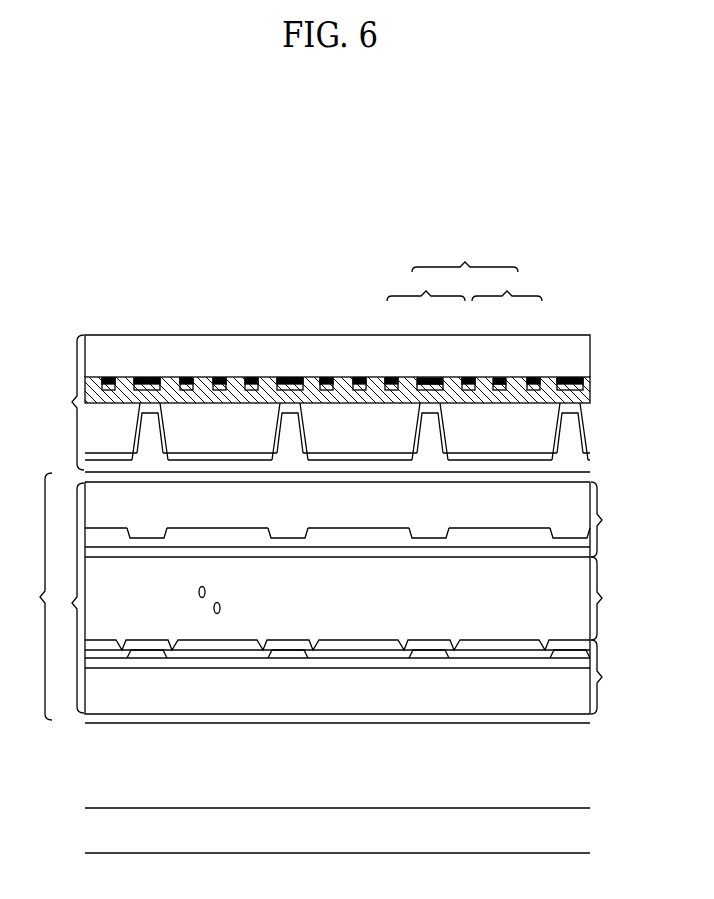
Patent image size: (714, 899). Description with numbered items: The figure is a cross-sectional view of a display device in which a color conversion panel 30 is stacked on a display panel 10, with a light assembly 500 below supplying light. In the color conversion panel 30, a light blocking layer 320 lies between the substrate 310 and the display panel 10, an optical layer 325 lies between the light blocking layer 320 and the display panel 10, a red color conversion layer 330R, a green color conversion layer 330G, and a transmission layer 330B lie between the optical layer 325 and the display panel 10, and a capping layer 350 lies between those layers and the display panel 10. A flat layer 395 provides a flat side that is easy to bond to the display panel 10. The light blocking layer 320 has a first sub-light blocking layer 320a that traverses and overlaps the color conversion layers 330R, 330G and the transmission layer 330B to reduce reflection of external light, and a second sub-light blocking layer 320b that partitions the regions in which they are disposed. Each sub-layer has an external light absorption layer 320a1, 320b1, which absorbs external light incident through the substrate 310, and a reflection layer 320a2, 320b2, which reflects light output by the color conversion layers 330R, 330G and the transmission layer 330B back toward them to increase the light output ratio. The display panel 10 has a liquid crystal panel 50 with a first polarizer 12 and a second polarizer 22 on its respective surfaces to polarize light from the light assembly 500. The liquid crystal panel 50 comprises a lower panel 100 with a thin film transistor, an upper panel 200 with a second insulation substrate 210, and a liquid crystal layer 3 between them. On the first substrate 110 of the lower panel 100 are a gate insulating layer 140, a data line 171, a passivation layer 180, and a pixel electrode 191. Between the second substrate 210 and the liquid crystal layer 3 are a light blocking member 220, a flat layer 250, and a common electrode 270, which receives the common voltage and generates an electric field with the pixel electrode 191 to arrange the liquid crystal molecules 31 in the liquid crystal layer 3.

The color conversion panel 30 is at (67, 402).
The substrate 310 is at (125, 347).
The optical layer 325 is at (167, 382).
The light blocking layer 320 is at (342, 316).
The first sub-light blocking layer 320a is at (322, 331).
The external light absorption layer 320a1 is at (502, 377).
The reflection layer 320a2 is at (488, 377).
The second sub-light blocking layer 320b is at (358, 331).
The external light absorption layer 320b1 is at (435, 377).
The reflection layer 320b2 is at (418, 377).
The red color conversion layer 330R is at (221, 422).
The green color conversion layer 330G is at (343, 422).
The transmission layer 330B is at (528, 417).
The capping layer 350 is at (289, 408).
The flat layer 395 is at (585, 471).
The display panel 10 is at (33, 596).
The liquid crystal panel 50 is at (67, 598).
The upper panel 200 is at (358, 519).
The second insulation substrate 210 is at (338, 507).
The light blocking member 220 is at (288, 535).
The flat layer 250 is at (473, 540).
The common electrode 270 is at (125, 552).
The second polarizer 22 is at (513, 484).
The liquid crystal layer 3 is at (349, 598).
The liquid crystal molecules 31 is at (223, 606).
The pixel electrode 191 is at (383, 640).
The passivation layer 180 is at (236, 657).
The data line 171 is at (146, 653).
The gate insulating layer 140 is at (325, 663).
The first substrate 110 is at (518, 703).
The lower panel 100 is at (358, 677).
The first polarizer 12 is at (567, 723).
The light assembly 500 is at (577, 829).